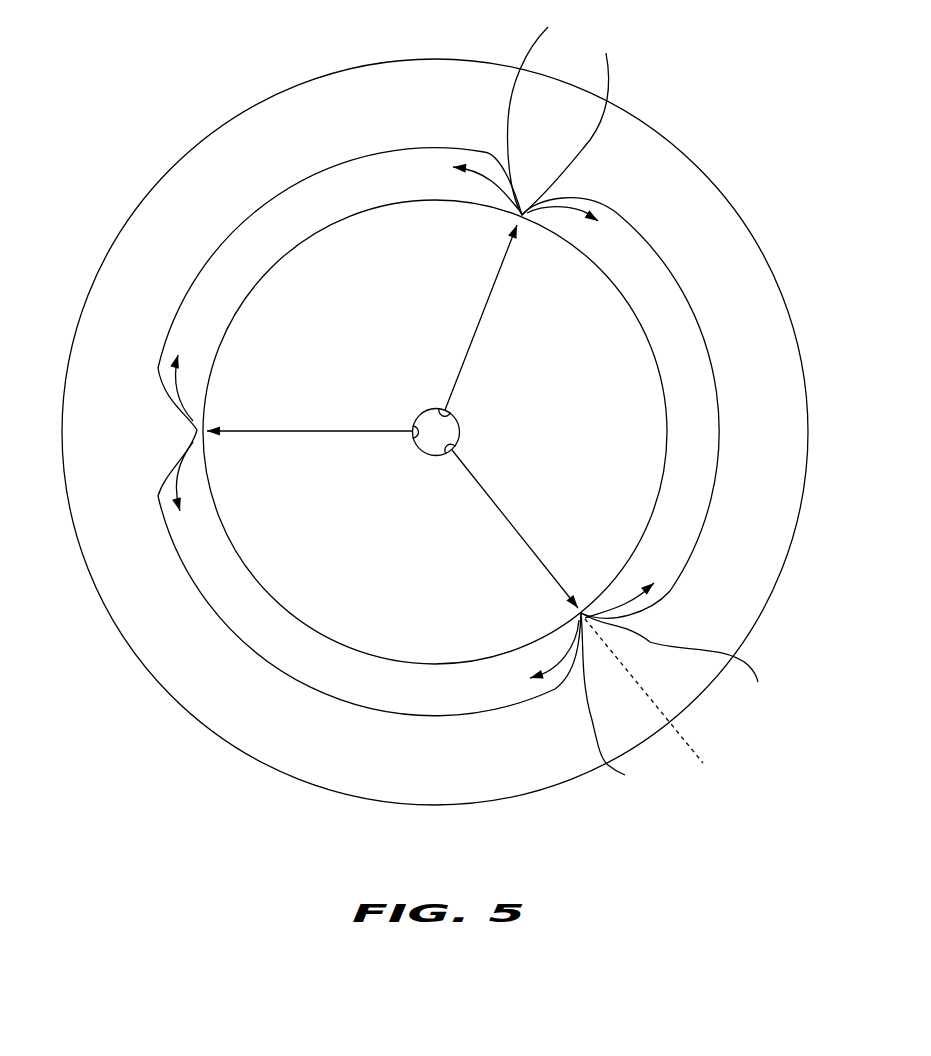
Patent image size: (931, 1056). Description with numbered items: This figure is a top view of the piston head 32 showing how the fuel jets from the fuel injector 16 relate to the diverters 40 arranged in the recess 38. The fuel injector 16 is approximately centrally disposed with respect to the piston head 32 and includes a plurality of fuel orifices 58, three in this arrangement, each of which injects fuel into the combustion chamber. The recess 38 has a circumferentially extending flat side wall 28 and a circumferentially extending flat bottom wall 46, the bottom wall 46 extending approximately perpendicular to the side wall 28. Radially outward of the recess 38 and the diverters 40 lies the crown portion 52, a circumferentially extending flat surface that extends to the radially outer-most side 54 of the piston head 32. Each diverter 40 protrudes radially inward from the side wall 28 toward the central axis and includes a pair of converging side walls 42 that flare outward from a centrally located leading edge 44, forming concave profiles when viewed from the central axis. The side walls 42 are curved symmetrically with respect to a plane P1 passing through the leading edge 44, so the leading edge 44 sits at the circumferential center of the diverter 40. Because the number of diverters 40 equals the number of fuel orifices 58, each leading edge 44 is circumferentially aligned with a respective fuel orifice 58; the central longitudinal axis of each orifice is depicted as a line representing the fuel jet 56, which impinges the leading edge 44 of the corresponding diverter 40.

The fuel injector 16 is at (427, 453).
The side wall 28 is at (702, 343).
The piston head 32 is at (168, 667).
The recess 38 is at (634, 344).
The diverter 40 is at (495, 227).
The converging side walls 42 is at (642, 396).
The leading edge 44 is at (524, 224).
The bottom wall 46 is at (690, 428).
The crown portion 52 is at (440, 68).
The radially outer-most side 54 is at (122, 207).
The fuel jet 56 is at (305, 430).
The fuel orifices 58 is at (442, 408).
The plane P1 is at (688, 746).